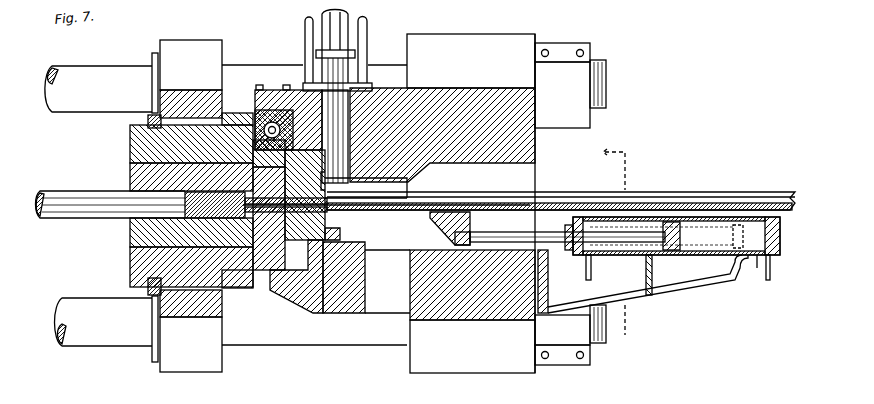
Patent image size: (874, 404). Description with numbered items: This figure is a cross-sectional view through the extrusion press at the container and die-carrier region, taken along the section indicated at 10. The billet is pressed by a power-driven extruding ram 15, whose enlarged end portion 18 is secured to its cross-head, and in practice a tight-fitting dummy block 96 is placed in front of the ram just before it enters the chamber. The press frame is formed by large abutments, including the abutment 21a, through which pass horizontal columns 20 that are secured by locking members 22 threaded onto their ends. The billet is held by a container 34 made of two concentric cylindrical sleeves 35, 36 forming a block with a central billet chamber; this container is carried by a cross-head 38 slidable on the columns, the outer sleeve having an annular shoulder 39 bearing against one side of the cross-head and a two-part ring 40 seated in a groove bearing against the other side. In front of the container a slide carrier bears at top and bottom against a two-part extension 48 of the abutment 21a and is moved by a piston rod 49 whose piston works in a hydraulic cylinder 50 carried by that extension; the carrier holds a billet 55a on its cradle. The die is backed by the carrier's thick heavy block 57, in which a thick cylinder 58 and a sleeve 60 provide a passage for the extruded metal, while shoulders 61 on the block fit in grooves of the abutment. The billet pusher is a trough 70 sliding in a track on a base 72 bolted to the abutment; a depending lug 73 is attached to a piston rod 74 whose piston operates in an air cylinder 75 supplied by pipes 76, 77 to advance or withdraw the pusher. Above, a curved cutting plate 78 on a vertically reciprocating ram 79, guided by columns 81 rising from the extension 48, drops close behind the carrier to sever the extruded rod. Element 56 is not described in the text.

The section line 10 is at (625, 243).
The extruding ram 15 is at (76, 184).
The enlarged end portion 18 is at (478, 326).
The horizontal columns 20 is at (226, 205).
The abutment 21a is at (471, 61).
The locking members 22 is at (570, 204).
The container 34 is at (130, 166).
The inner cylindrical sleeve 35 is at (150, 253).
The outer cylindrical sleeve 36 is at (130, 135).
The cross-head 38 is at (191, 206).
The annular shoulder 39 is at (232, 346).
The two-part ring 40 is at (148, 290).
The abutment extension 48 is at (383, 95).
The piston rod 49 is at (280, 95).
The hydraulic cylinder 50 is at (262, 92).
The billet 55a is at (212, 192).
The part 56 is at (240, 288).
The block 57 is at (333, 238).
The cylinder 58 is at (268, 272).
The sleeve 60 is at (278, 278).
The shoulders 61 is at (300, 270).
The trough 70 is at (672, 196).
The base 72 is at (652, 292).
The depending lug 73 is at (452, 227).
The piston rod 74 is at (650, 240).
The air cylinder 75 is at (700, 255).
The air pressure supplying pipe 76 is at (591, 272).
The air pressure supplying pipe 77 is at (770, 278).
The curved cutting plate 78 is at (345, 193).
The vertically reciprocating ram 79 is at (333, 105).
The columns 81 is at (368, 30).
The dummy block 96 is at (150, 232).